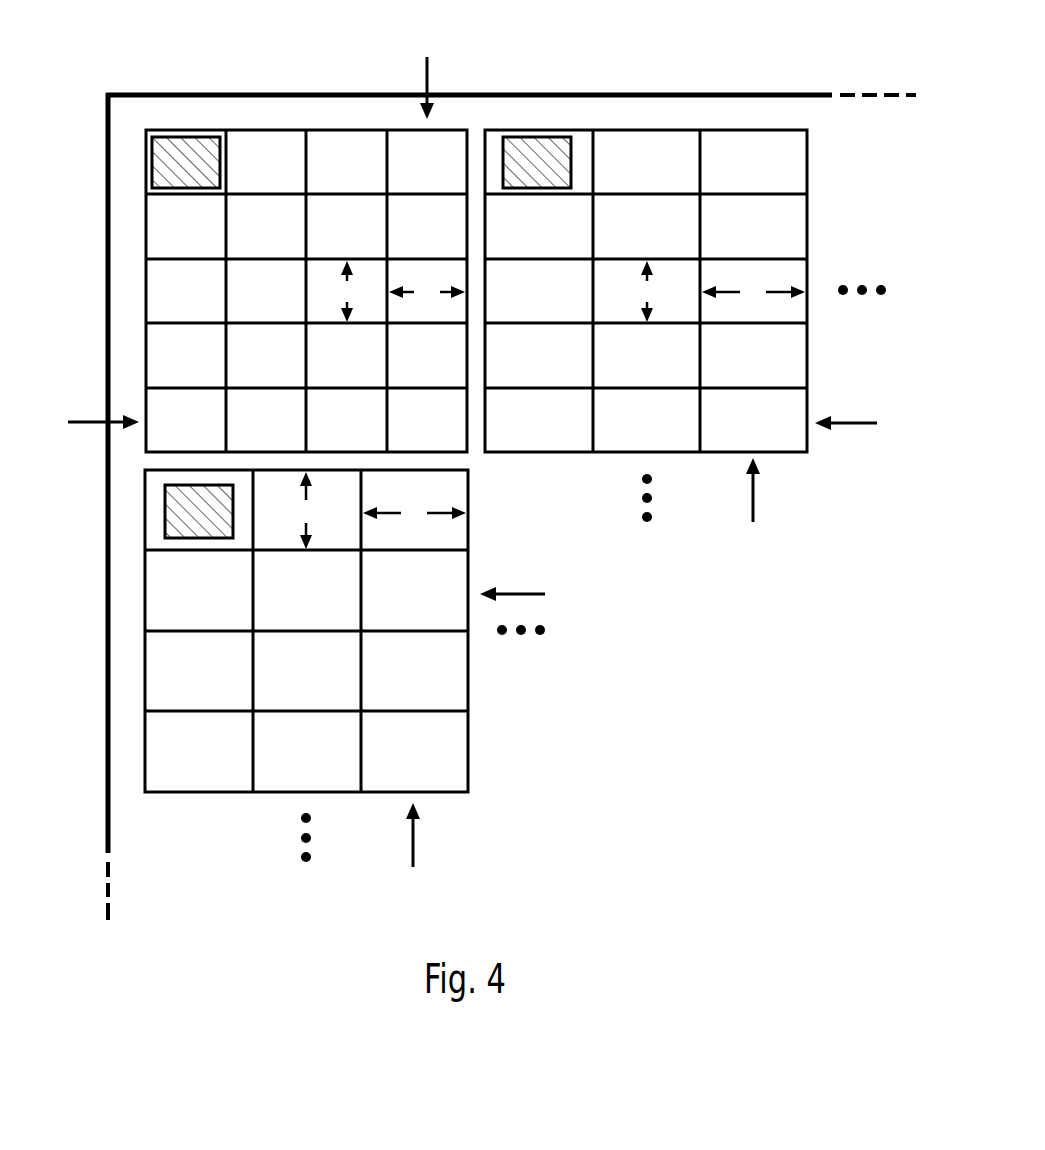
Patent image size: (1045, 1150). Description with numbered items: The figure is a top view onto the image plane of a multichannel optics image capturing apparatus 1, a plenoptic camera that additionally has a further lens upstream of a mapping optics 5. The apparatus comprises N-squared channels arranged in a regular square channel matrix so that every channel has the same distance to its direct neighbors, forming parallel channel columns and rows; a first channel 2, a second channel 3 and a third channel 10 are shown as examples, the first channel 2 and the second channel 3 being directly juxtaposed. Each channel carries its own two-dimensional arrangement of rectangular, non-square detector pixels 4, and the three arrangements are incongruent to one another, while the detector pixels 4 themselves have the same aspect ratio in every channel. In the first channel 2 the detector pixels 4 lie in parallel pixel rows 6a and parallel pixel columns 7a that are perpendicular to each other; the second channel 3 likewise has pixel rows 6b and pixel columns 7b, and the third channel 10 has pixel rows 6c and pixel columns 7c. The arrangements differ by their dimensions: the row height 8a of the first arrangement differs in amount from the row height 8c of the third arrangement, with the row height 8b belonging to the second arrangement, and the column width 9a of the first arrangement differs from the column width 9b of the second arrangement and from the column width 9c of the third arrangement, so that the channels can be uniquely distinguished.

The multichannel optics image capturing apparatus 1 is at (491, 28).
The first channel 2 is at (264, 165).
The second channel 3 is at (643, 165).
The detector pixels 4 is at (185, 163).
The mapping optics 5 is at (476, 418).
The pixel rows 6a is at (103, 409).
The pixel rows 6b is at (846, 410).
The pixel rows 6c is at (512, 580).
The pixel columns 7a is at (440, 88).
The pixel columns 7b is at (766, 490).
The pixel columns 7c is at (427, 835).
The row height 8a is at (347, 291).
The pixel height of second module 8b is at (647, 291).
The row height 8c is at (306, 510).
The column width 9a is at (427, 292).
The column width 9b is at (753, 292).
The column width 9c is at (414, 513).
The third channel 10 is at (447, 751).